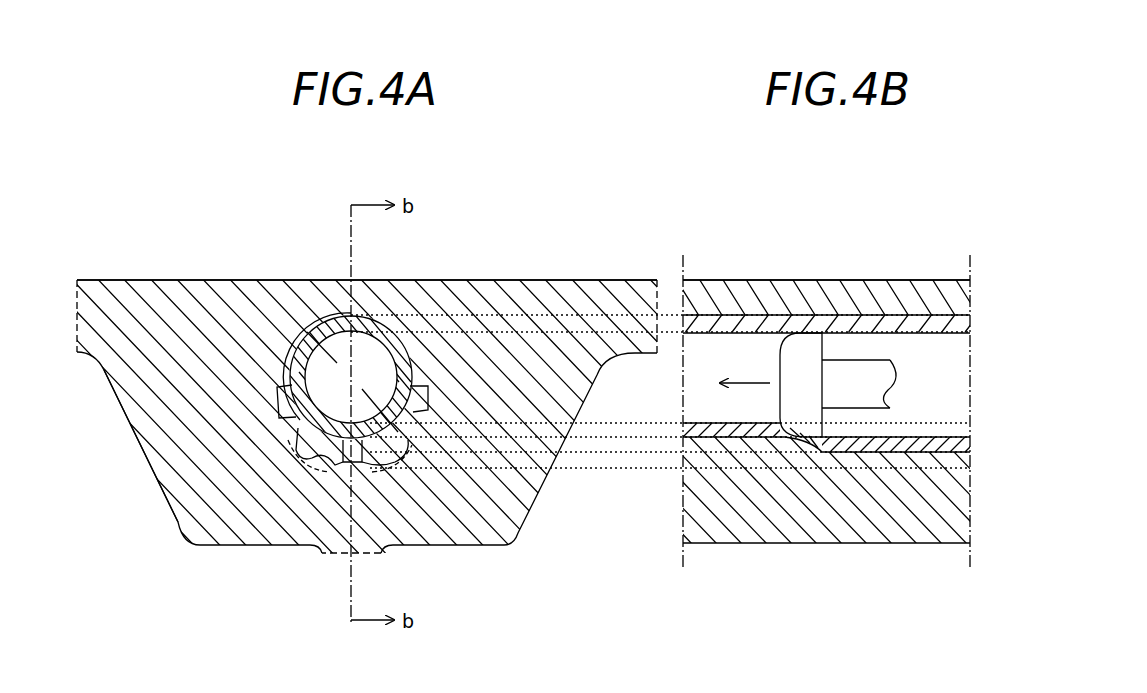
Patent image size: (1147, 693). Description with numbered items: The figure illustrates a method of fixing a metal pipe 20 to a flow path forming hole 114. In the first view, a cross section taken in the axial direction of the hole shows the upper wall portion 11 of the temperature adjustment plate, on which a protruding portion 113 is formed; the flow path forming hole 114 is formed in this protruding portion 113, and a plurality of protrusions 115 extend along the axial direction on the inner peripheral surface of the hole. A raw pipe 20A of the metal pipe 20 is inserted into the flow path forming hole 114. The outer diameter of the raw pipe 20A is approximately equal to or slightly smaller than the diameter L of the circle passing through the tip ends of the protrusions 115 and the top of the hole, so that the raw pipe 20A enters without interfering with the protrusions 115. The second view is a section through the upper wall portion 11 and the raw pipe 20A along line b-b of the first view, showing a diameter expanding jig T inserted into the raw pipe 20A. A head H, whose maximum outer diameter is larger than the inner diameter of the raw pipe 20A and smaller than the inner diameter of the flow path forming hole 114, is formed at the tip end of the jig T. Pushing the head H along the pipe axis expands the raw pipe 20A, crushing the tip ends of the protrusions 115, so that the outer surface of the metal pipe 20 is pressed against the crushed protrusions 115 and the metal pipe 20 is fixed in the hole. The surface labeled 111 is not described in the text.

In FIG. 4A, the upper wall portion 11 is at (545, 292).
In FIG. 4B, the upper wall portion 11 is at (795, 285).
In FIG. 4A, the outer surface 111 is at (181, 293).
In FIG. 4B, the outer surface 111 is at (870, 282).
In FIG. 4A, the protruding portion 113 is at (140, 438).
In FIG. 4A, the flow path forming hole 114 is at (320, 455).
In FIG. 4A, the protrusions 115 is at (300, 445).
In FIG. 4B, the protrusions 115 is at (683, 440).
In FIG. 4B, the metal pipe 20 is at (852, 379).
In FIG. 4A, the raw pipe 20A is at (323, 323).
In FIG. 4B, the raw pipe 20A is at (710, 327).
In FIG. 4B, the head H is at (790, 340).
In FIG. 4B, the diameter expanding jig T is at (852, 362).
In FIG. 4A, the diameter L is at (349, 382).